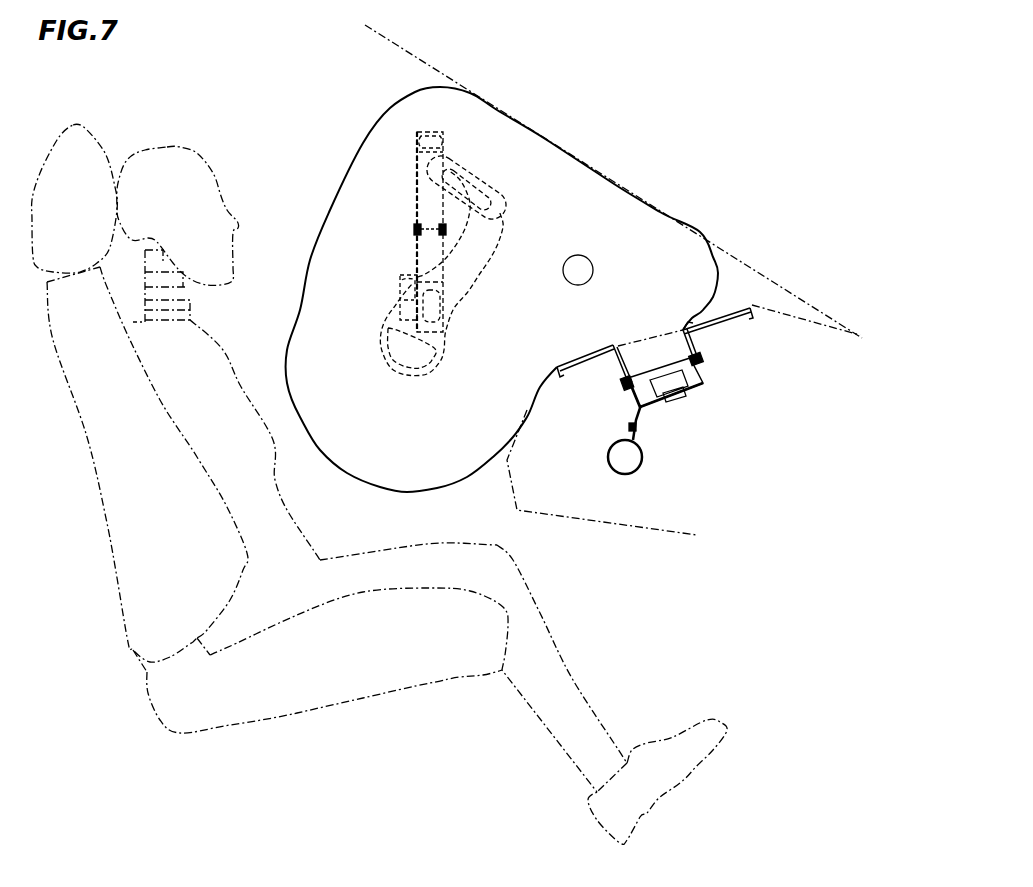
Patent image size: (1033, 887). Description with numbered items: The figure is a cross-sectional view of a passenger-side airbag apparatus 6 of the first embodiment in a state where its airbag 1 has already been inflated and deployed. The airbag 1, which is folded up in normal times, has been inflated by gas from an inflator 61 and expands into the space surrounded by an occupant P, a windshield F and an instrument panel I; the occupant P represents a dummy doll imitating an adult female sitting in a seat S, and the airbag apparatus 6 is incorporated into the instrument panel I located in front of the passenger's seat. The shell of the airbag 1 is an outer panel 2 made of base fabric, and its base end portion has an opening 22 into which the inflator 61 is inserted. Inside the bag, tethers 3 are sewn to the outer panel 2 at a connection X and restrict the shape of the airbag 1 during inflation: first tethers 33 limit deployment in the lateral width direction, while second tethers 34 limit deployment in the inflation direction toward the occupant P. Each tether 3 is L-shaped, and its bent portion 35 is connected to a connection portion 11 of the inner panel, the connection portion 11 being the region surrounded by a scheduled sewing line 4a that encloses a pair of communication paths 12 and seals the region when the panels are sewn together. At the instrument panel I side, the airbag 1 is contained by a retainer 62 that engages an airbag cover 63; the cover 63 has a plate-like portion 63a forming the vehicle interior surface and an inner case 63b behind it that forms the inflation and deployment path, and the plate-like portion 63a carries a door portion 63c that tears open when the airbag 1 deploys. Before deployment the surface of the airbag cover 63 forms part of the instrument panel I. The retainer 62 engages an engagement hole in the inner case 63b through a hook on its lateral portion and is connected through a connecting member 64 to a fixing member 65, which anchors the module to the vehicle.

The airbag 1 is at (502, 289).
The outer panel 2 is at (405, 441).
The tethers 3 is at (416, 232).
The scheduled sewing line 4a is at (483, 173).
The airbag apparatus 6 is at (708, 199).
The connection portion 11 is at (467, 278).
The communication paths 12 is at (493, 200).
The opening 22 is at (579, 286).
The first tethers 33 is at (410, 313).
The second tethers 34 is at (415, 185).
The bent portions 35 is at (447, 313).
The inflator 61 is at (690, 393).
The retainer 62 is at (705, 360).
The airbag cover 63 is at (579, 376).
The plate-like portion 63a is at (747, 321).
The inner case 63b is at (616, 368).
The door portion 63c is at (731, 309).
The connecting member 64 is at (635, 410).
The fixing member 65 is at (643, 456).
The occupant P is at (167, 146).
The seat S is at (85, 438).
The windshield F is at (793, 287).
The instrument panel I is at (512, 497).
The connection X is at (415, 130).